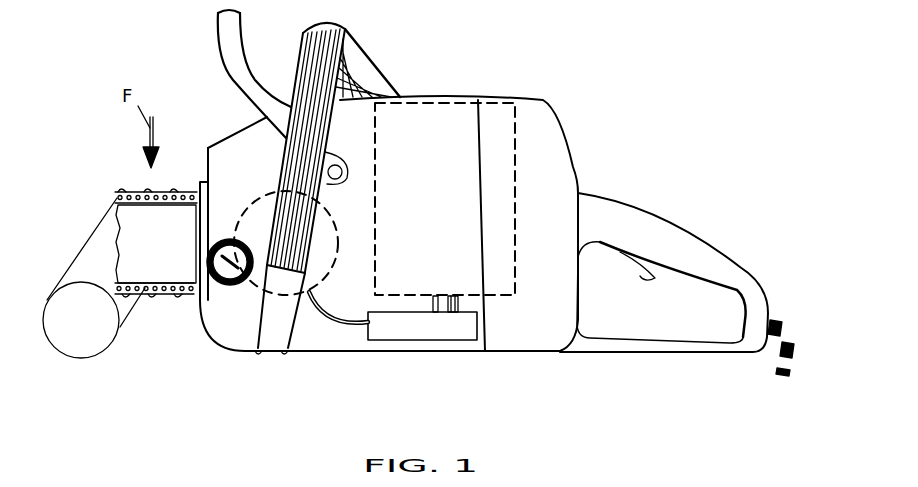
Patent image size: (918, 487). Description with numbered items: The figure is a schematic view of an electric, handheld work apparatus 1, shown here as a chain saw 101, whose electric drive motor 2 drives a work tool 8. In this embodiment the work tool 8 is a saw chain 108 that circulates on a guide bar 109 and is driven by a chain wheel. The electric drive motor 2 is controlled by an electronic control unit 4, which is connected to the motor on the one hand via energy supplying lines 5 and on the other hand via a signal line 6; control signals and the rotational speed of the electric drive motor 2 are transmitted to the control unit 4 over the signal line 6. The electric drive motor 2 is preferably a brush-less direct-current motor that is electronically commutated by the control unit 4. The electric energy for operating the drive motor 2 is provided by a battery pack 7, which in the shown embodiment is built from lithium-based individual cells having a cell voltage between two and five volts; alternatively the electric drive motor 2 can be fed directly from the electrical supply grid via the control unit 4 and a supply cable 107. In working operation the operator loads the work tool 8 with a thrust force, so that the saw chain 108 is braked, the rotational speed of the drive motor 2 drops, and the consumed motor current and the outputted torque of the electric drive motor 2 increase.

The work apparatus 1 is at (637, 105).
The electric drive motor 2 is at (255, 197).
The electronic control unit 4 is at (422, 330).
The energy supplying lines 5 is at (322, 313).
The signal line 6 is at (351, 345).
The battery pack 7 is at (494, 100).
The work tool 8 is at (104, 153).
The chain saw 101 is at (557, 188).
The supply cable 107 is at (788, 340).
The saw chain 108 is at (145, 291).
The guide bar 109 is at (128, 240).